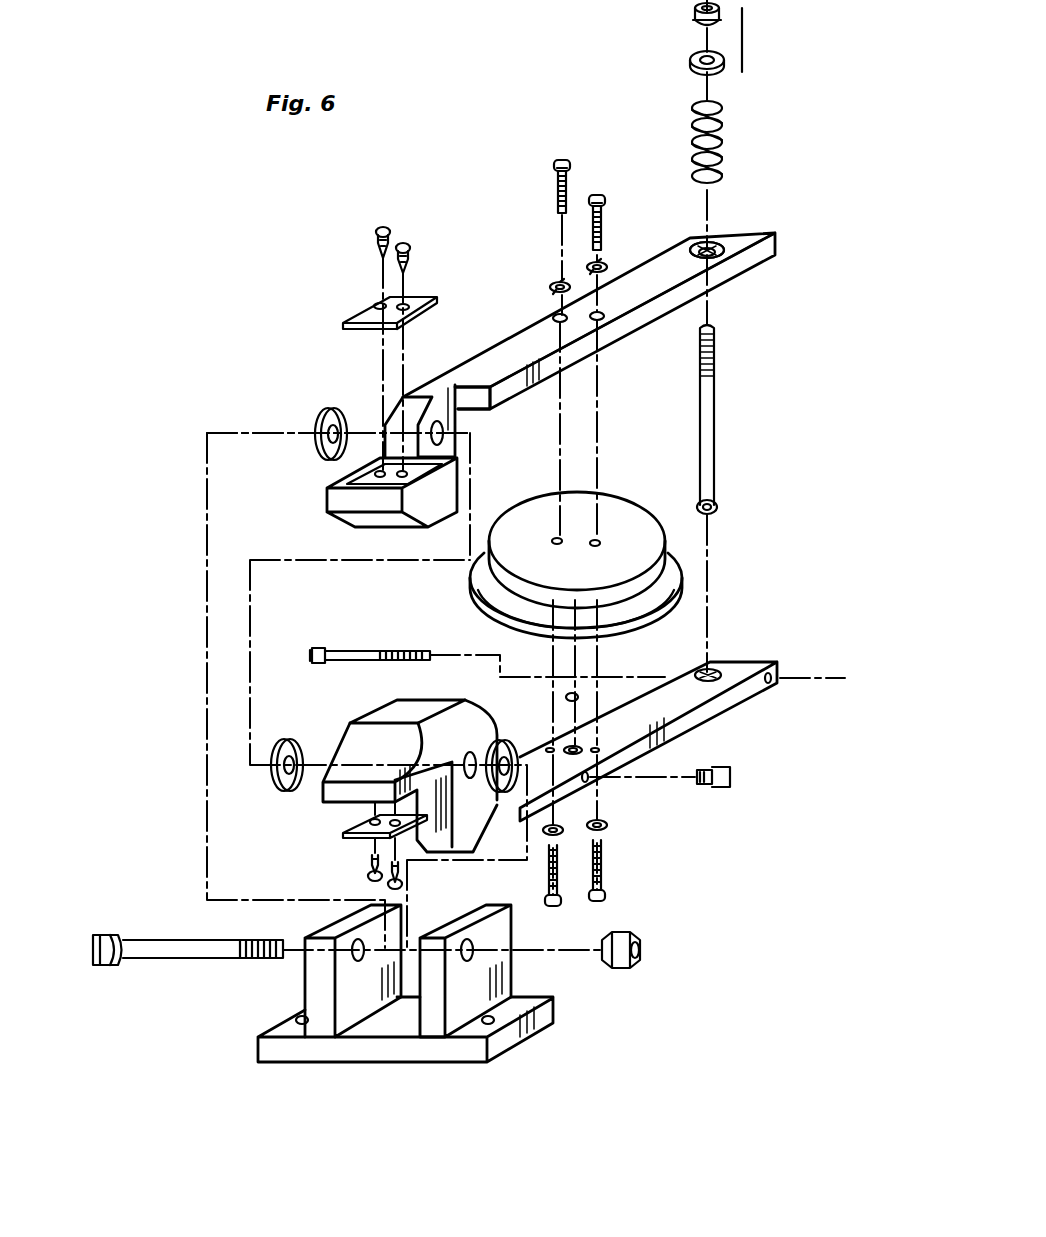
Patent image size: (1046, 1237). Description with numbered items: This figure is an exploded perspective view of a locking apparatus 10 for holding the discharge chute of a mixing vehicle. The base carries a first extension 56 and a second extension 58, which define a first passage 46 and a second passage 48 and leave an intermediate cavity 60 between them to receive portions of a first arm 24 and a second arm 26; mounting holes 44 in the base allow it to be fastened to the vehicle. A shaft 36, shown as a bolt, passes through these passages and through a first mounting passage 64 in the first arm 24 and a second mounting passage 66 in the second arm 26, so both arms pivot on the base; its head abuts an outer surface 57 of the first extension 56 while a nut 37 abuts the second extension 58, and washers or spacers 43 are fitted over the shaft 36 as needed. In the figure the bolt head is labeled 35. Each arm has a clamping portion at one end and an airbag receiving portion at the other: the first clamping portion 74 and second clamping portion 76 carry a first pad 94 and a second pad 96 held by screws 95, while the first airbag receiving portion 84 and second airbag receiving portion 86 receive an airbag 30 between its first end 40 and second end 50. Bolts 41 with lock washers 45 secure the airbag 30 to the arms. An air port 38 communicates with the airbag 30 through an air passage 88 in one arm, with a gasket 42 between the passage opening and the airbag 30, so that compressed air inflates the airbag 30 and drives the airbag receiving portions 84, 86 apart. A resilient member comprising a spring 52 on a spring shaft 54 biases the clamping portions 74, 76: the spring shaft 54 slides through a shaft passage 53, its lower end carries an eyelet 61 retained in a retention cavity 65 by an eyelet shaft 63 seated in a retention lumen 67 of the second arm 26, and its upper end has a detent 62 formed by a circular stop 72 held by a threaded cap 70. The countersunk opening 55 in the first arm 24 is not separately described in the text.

The locking apparatus 10 is at (196, 427).
The first arm 24 is at (777, 241).
The second arm 26 is at (778, 663).
The airbag 30 is at (472, 587).
The bolt head 35 is at (96, 971).
The shaft 36 is at (185, 940).
The nut 37 is at (641, 940).
The air port 38 is at (715, 790).
The first end 40 is at (573, 505).
The bolts 41 is at (598, 192).
The gasket 42 is at (578, 700).
The washers or spacers 43 is at (330, 408).
The mounting holes 44 is at (300, 1020).
The lock washers 45 is at (592, 264).
The first passage 46 is at (465, 940).
The second passage 48 is at (356, 943).
The second end 50 is at (495, 628).
The spring 52 is at (722, 152).
The shaft passage 53 is at (720, 243).
The spring shaft 54 is at (716, 410).
The countersunk hole 55 is at (696, 243).
The first extension 56 is at (435, 985).
The outer surface 57 is at (485, 968).
The second extension 58 is at (320, 975).
The intermediate cavity 60 is at (407, 975).
The eyelet 61 is at (718, 507).
The detent 62 is at (745, 5).
The eyelet shaft 63 is at (355, 650).
The first mounting passage 64 is at (463, 421).
The retention cavity 65 is at (720, 668).
The second mounting passage 66 is at (410, 776).
The retention lumen 67 is at (772, 687).
The threaded cap 70 is at (692, 18).
The circular stop 72 is at (690, 64).
The first clamping portion 74 is at (355, 472).
The second clamping portion 76 is at (345, 802).
The first airbag receiving portion 84 is at (618, 338).
The second airbag receiving portion 86 is at (700, 757).
The air passage 88 is at (555, 745).
The first pad 94 is at (432, 300).
The screws 95 is at (378, 305).
The second pad 96 is at (358, 835).